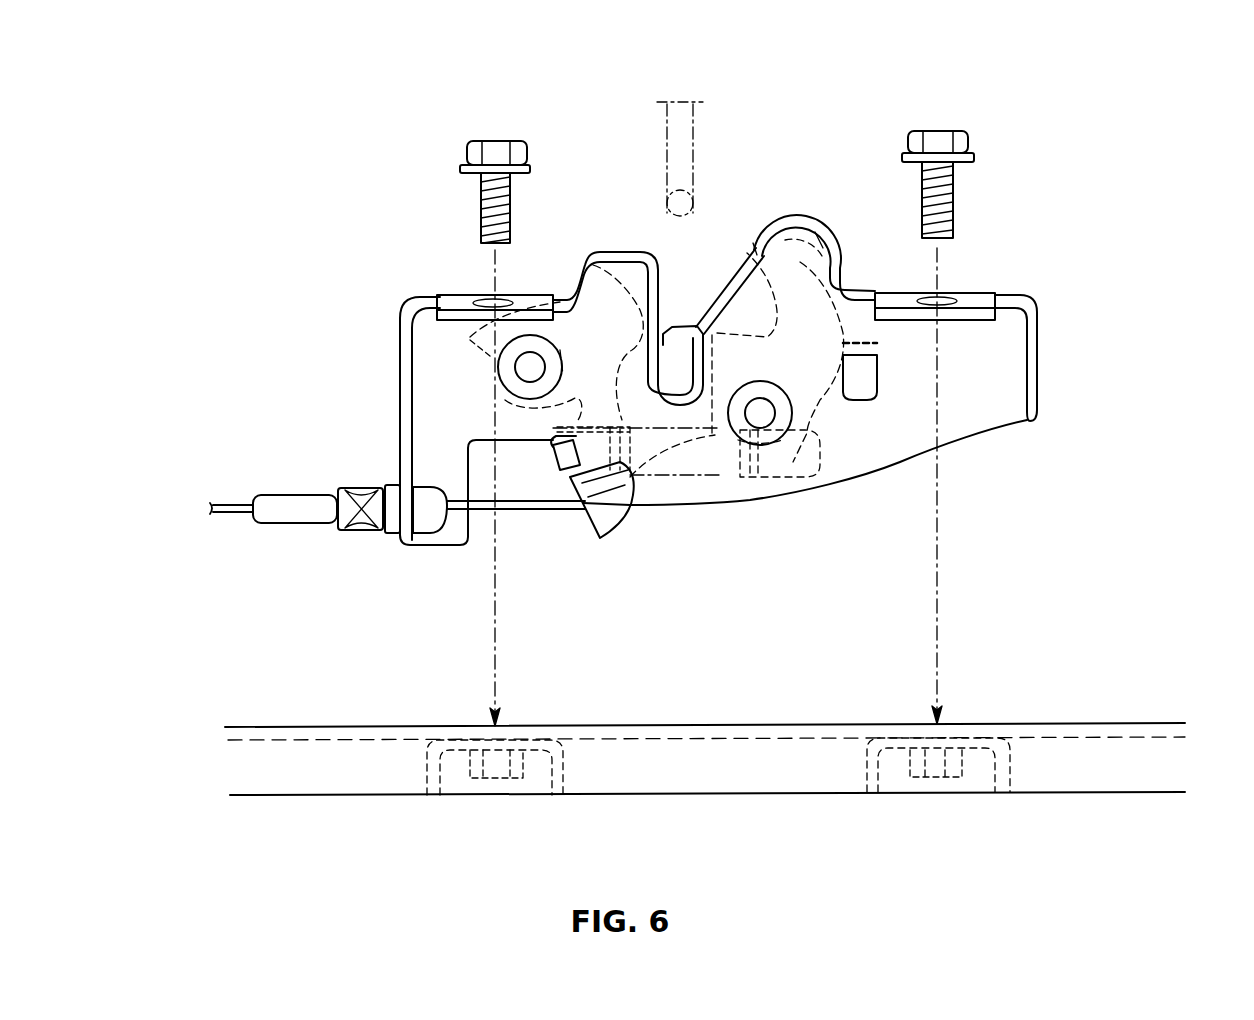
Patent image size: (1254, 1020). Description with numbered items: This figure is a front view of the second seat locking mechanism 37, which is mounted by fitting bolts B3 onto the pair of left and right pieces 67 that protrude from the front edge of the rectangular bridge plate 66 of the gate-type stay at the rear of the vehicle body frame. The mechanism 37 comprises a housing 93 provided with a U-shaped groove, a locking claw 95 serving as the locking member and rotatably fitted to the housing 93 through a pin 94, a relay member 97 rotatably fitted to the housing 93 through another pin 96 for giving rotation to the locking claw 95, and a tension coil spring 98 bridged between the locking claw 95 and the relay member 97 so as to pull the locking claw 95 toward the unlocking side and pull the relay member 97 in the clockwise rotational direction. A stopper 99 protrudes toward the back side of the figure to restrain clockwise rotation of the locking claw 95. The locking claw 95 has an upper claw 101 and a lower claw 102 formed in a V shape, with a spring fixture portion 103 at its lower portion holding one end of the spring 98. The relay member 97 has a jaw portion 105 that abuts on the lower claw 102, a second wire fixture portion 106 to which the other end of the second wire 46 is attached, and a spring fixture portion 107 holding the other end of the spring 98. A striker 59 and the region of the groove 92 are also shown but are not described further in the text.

The fitting bolt B3 is at (468, 149).
The second seat locking mechanism 37 is at (615, 181).
The second wire 46 is at (232, 500).
The striker 59 is at (693, 143).
The bridge plate 66 is at (1058, 723).
The piece 67 is at (565, 770).
The channel portion 92 is at (676, 273).
The housing 93 is at (1025, 296).
The pin 94 is at (776, 411).
The locking claw 95 is at (820, 255).
The pin 96 is at (518, 372).
The relay member 97 is at (490, 358).
The tension coil spring 98 is at (722, 478).
The stopper 99 is at (867, 357).
The upper claw 101 is at (795, 243).
The lower claw 102 is at (690, 322).
The spring fixture portion 103 is at (813, 463).
The jaw portion 105 is at (615, 262).
The second wire fixture portion 106 is at (585, 518).
The spring fixture portion 107 is at (554, 457).